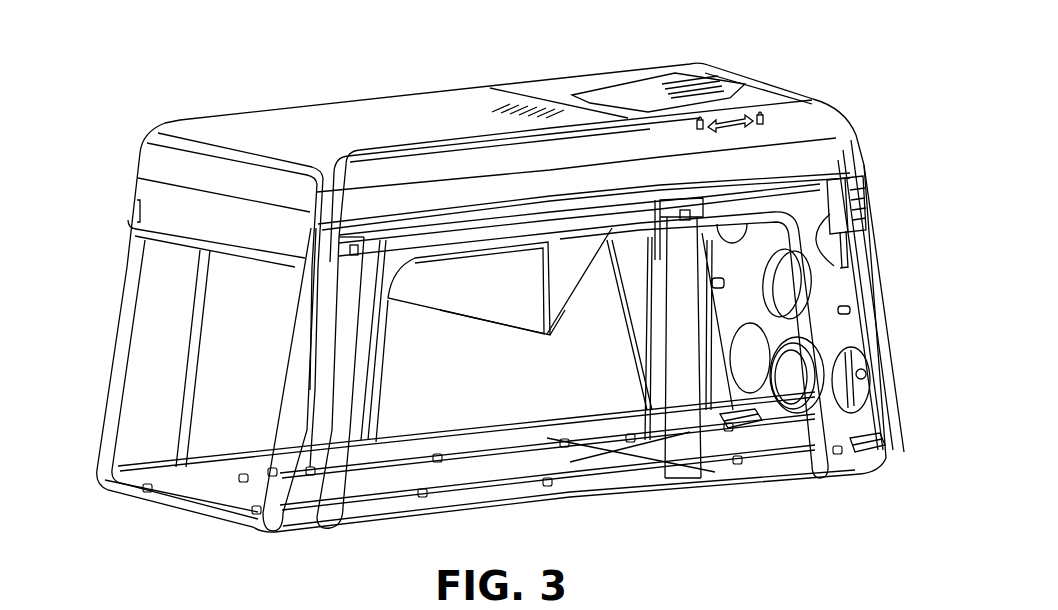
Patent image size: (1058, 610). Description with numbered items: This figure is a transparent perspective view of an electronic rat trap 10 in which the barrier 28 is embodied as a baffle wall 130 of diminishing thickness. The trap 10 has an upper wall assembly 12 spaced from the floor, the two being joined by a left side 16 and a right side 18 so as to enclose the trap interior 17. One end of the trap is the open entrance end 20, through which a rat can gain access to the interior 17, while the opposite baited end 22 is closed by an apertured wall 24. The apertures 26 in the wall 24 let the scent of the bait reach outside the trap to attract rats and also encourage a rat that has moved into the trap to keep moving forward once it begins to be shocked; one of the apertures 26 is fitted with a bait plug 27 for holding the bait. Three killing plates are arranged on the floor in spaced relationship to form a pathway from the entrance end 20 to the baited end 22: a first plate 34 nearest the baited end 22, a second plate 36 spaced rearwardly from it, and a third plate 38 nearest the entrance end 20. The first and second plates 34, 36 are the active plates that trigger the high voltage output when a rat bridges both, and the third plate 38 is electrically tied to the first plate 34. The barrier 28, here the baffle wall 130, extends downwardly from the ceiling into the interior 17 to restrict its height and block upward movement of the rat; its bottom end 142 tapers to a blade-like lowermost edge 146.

The rat trap 10 is at (892, 114).
The upper wall assembly 12 is at (816, 95).
The left side 16 is at (157, 300).
The trap interior 17 is at (208, 446).
The right side 18 is at (395, 478).
The entrance end 20 is at (112, 390).
The baited end 22 is at (903, 364).
The apertured wall 24 is at (847, 290).
The apertures 26 is at (863, 377).
The bait plug 27 is at (805, 358).
The barrier 28 is at (571, 256).
The first plate 34 is at (750, 443).
The second plate 36 is at (592, 465).
The third plate 38 is at (225, 500).
The baffle wall 130 is at (498, 297).
The bottom end 142 is at (568, 316).
The lowermost edge 146 is at (503, 323).